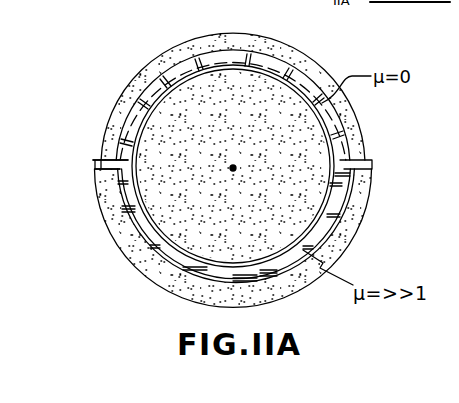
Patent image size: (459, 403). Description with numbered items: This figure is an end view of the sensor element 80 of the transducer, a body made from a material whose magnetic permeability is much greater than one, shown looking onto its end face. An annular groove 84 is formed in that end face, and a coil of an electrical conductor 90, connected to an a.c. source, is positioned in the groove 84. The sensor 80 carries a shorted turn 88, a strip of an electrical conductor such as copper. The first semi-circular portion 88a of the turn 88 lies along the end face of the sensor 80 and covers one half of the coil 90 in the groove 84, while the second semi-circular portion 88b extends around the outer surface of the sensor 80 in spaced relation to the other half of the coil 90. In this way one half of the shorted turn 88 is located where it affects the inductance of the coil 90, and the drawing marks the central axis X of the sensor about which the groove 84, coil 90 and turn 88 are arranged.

The sensor element 80 is at (213, 32).
The annular groove 84 is at (143, 272).
The shorted turn 88 is at (186, 59).
The first semi-circular portion 88a is at (157, 78).
The second semi-circular portion 88b is at (357, 238).
The coil of an electrical conductor 90 is at (148, 240).
The shaft axis X is at (233, 168).